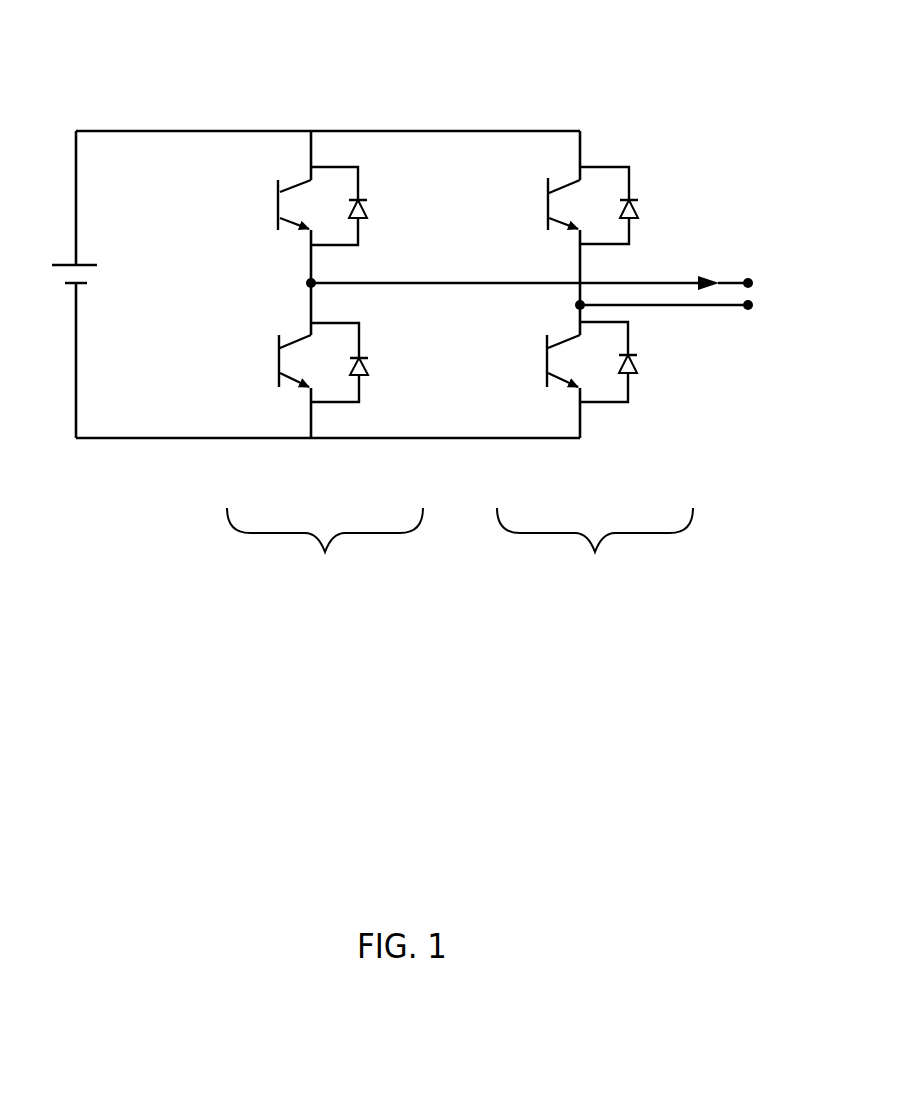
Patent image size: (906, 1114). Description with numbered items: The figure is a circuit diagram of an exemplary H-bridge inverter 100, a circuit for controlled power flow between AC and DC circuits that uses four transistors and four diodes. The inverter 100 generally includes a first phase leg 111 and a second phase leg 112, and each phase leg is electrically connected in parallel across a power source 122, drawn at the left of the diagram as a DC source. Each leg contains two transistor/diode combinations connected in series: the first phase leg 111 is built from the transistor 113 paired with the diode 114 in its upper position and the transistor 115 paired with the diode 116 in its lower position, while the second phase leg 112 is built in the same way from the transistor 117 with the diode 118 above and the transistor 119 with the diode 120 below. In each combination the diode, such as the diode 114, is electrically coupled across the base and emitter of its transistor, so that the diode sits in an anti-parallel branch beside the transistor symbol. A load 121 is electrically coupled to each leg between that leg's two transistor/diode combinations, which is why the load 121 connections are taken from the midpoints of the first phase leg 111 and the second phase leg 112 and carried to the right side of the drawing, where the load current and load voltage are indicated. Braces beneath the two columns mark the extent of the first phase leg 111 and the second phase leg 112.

The single-phase full-bridge inverter circuit 100 is at (111, 56).
The first phase leg 111 is at (325, 363).
The second phase leg 112 is at (595, 363).
The transistor 113 is at (225, 210).
The diode 114 is at (420, 203).
The transistor 115 is at (233, 360).
The diode 116 is at (425, 358).
The transistor T3 117 is at (502, 208).
The diode D3 118 is at (703, 200).
The transistor T4 119 is at (495, 372).
The diode D4 120 is at (698, 367).
The load 121 is at (785, 282).
The power source 122 is at (48, 258).